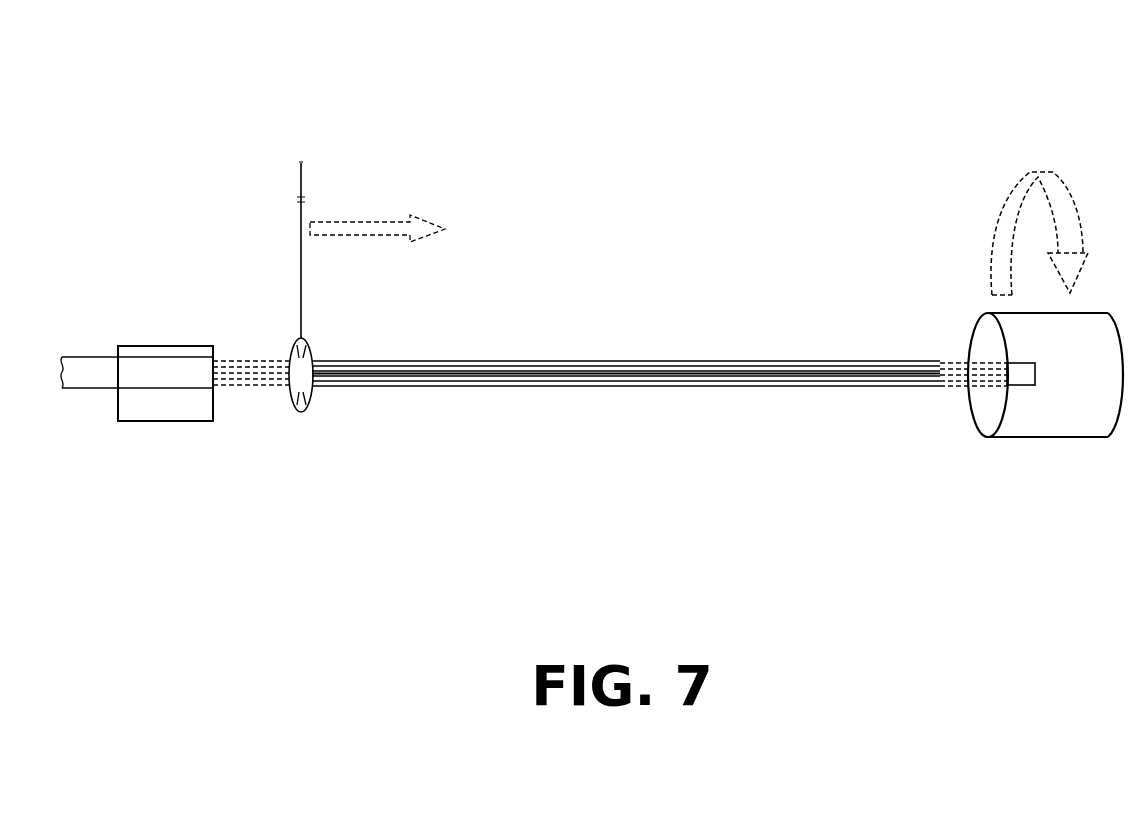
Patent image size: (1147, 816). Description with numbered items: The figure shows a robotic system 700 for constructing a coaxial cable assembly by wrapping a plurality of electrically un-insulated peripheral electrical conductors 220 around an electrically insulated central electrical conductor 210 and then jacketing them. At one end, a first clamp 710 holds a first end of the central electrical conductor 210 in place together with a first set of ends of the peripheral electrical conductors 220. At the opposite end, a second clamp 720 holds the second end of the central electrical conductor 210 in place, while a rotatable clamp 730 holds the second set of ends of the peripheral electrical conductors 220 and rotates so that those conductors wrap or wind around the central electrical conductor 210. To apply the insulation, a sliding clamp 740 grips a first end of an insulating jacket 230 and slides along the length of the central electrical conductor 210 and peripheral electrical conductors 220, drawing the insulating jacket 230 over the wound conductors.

The robotic system 700 is at (718, 110).
The central electrical conductor length 210 is at (585, 374).
The peripheral electrical conductors 220 is at (665, 361).
The insulating jacket 230 is at (100, 390).
The first clamp 710 is at (166, 346).
The second clamp 720 is at (1018, 382).
The rotatable clamp 730 is at (1068, 425).
The sliding clamp 740 is at (305, 340).